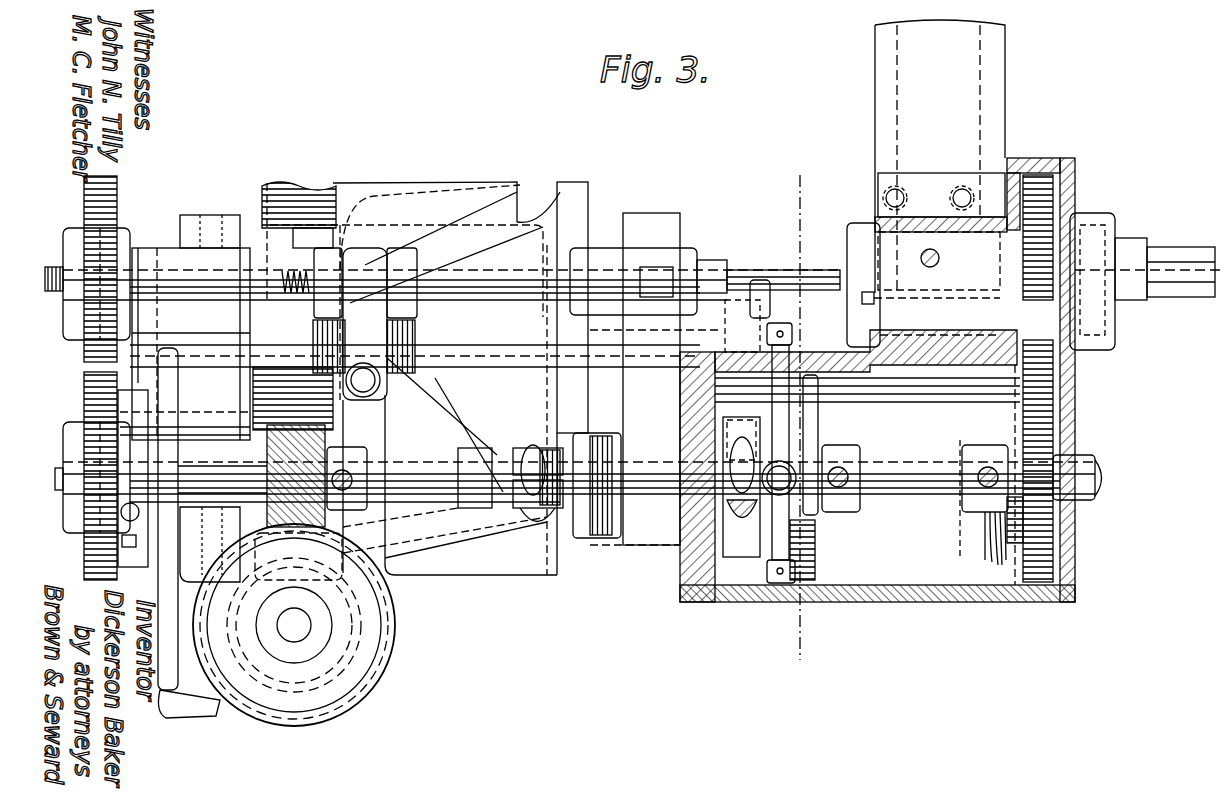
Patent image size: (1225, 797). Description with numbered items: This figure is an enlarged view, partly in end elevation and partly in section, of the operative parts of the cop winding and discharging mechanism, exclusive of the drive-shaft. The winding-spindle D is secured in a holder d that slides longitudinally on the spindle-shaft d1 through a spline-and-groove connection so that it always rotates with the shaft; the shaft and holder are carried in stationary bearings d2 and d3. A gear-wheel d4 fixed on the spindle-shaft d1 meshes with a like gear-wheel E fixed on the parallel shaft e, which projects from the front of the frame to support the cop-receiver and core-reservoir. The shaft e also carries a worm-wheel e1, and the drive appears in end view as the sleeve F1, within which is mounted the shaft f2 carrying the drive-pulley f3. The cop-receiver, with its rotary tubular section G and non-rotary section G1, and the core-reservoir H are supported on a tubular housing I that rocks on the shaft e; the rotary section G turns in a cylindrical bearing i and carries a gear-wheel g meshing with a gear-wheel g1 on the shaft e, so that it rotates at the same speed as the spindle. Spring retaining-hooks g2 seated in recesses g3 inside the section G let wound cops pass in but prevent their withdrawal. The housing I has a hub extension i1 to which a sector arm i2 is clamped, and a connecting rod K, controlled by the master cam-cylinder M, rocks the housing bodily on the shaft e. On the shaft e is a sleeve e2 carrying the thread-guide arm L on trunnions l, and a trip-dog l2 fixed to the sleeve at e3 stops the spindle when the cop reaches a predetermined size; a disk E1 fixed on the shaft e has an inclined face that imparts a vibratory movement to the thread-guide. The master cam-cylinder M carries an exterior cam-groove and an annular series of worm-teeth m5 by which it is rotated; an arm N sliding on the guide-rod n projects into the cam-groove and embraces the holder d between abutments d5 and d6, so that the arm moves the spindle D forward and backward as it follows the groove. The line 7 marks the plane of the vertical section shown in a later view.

The spindle-shaft d1 is at (52, 265).
The gear-wheel d4 is at (117, 193).
The gear-wheel E is at (84, 553).
The stationary bearing d3 is at (160, 258).
The worm-teeth m5 is at (285, 185).
The abutment d5 is at (322, 250).
The abutment d6 is at (400, 253).
The spindle-holder d is at (572, 237).
The guide rod n is at (415, 347).
The arm N is at (363, 399).
The master cam-cylinder M is at (543, 576).
The connecting rod K is at (588, 372).
The stationary bearing d2 is at (597, 258).
The winding-spindle D is at (770, 275).
The hub extension i1 is at (662, 512).
The sector arm i2 is at (597, 465).
The tubular housing I is at (880, 600).
The core-reservoir H is at (940, 156).
The cylindrical bearing i is at (882, 218).
The rotary tubular section G is at (856, 270).
The gear-wheel g is at (1050, 210).
The gear-wheel g1 is at (1030, 418).
The non-rotary tubular section G1 is at (1160, 250).
The spring retaining-hooks g2 is at (868, 300).
The recesses g3 is at (882, 336).
The thread-guide arm L is at (782, 444).
The trunnions l is at (784, 478).
The trip-dog l2 is at (736, 428).
The fixing point of trip-dog e3 is at (752, 442).
The disk E1 is at (805, 555).
The worm-wheel e1 is at (337, 455).
The sleeve e2 is at (510, 483).
The shaft e is at (60, 470).
The sleeve F1 is at (394, 622).
The drive-pulley f3 is at (390, 648).
The shaft f2 is at (300, 629).
The section line 7 is at (791, 423).